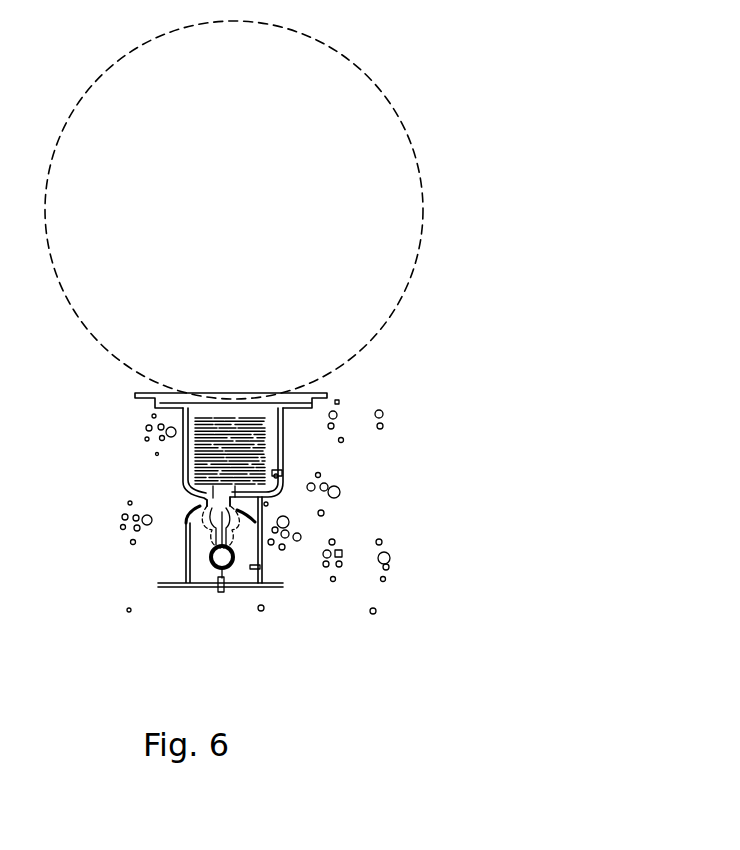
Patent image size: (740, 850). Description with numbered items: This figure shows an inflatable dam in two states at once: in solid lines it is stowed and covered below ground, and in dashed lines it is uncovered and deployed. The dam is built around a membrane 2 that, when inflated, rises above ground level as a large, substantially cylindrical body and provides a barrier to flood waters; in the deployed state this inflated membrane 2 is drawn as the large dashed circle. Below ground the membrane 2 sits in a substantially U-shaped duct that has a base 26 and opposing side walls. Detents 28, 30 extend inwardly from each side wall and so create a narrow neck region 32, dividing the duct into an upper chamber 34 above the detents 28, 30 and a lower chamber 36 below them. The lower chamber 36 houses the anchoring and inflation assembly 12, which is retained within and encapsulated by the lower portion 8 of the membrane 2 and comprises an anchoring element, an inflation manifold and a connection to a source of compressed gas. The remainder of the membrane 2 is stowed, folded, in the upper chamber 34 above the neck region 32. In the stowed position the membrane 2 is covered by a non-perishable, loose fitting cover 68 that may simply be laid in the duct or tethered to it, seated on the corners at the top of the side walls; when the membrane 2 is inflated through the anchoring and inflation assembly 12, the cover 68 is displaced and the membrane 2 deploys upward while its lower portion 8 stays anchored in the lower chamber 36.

The membrane 2 is at (180, 463).
The cover 68 is at (283, 395).
The upper chamber 34 is at (281, 455).
The narrow neck region 32 is at (200, 497).
The detent 28 is at (188, 526).
The detent 30 is at (240, 513).
The lower portion 8 is at (203, 538).
The lower chamber 36 is at (188, 558).
The anchoring and inflation assembly 12 is at (259, 556).
The base 26 is at (234, 592).